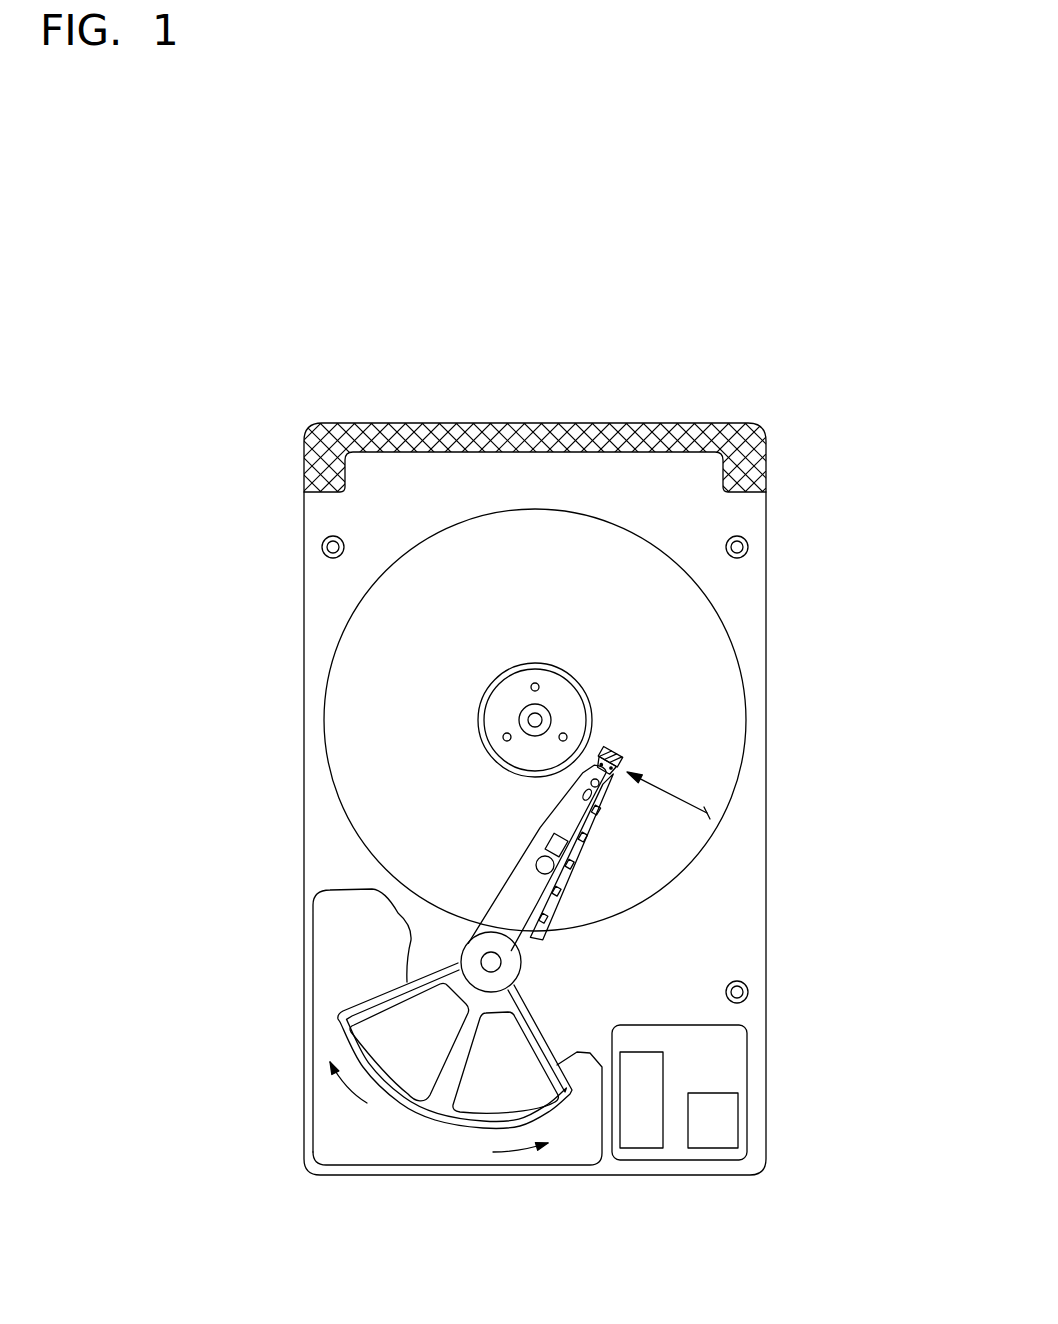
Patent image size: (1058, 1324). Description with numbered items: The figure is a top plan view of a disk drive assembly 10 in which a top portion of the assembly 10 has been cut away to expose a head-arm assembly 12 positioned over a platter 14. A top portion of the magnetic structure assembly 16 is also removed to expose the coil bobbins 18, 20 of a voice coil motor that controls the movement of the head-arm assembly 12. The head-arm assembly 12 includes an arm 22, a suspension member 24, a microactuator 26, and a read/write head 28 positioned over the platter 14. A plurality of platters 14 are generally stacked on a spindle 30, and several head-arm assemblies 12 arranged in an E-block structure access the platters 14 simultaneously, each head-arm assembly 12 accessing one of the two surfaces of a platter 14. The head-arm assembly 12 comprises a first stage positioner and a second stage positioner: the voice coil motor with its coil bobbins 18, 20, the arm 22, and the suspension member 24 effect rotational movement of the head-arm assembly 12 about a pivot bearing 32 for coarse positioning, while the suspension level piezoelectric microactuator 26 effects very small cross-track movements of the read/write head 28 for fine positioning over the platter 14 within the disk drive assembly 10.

The disk drive assembly 10 is at (857, 521).
The head-arm assembly 12 is at (553, 951).
The platter 14 is at (343, 717).
The magnetic structure assembly 16 is at (290, 1059).
The coil bobbin 18 is at (532, 1032).
The coil bobbin 20 is at (408, 1098).
The arm 22 is at (468, 879).
The suspension member 24 is at (650, 817).
The microactuator 26 is at (605, 743).
The read/write head 28 is at (646, 747).
The spindle 30 is at (485, 692).
The pivot bearing 32 is at (501, 963).